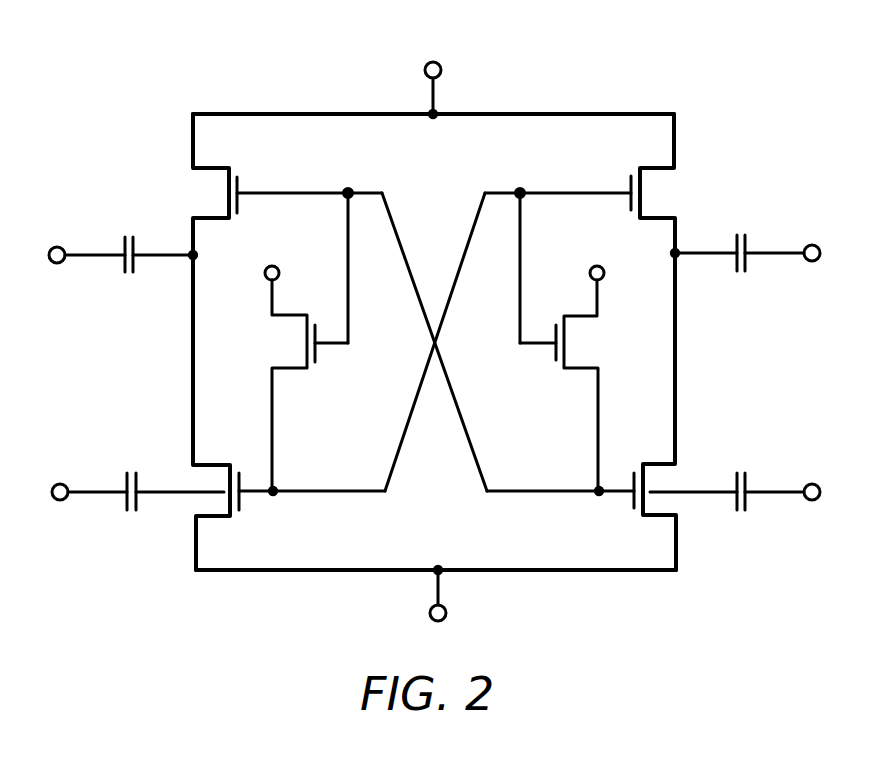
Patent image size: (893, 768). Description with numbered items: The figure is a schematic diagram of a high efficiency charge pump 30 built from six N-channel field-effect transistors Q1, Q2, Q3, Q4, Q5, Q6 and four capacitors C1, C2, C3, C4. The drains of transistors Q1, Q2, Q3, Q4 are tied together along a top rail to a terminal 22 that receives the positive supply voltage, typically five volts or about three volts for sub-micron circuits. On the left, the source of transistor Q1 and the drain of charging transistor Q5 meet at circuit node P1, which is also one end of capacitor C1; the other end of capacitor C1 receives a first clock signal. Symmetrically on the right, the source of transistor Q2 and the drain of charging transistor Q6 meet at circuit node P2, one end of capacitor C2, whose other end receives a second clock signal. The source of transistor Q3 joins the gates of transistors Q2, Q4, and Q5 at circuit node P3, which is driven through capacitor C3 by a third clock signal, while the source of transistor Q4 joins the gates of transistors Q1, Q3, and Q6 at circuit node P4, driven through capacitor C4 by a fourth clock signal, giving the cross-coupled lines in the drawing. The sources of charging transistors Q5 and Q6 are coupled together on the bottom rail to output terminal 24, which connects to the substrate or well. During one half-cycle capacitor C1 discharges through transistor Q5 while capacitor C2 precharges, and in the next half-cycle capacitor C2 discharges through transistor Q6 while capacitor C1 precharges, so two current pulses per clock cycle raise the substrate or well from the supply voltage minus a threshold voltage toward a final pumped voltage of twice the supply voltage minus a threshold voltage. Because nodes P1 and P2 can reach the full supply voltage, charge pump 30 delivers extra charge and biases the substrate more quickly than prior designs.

The charge pump 30 is at (148, 118).
The terminal 22 is at (442, 68).
The output terminal 24 is at (447, 612).
The transistor Q1 is at (274, 195).
The transistor Q2 is at (592, 193).
The transistor Q3 is at (291, 362).
The transistor Q4 is at (572, 362).
The first charging transistor Q5 is at (243, 517).
The second charging transistor Q6 is at (642, 516).
The first capacitor C1 is at (104, 240).
The second capacitor C2 is at (768, 238).
The capacitor C3 is at (118, 476).
The capacitor C4 is at (755, 476).
The circuit node P1 is at (188, 259).
The circuit node P2 is at (680, 257).
The circuit node P3 is at (273, 496).
The circuit node P4 is at (599, 496).